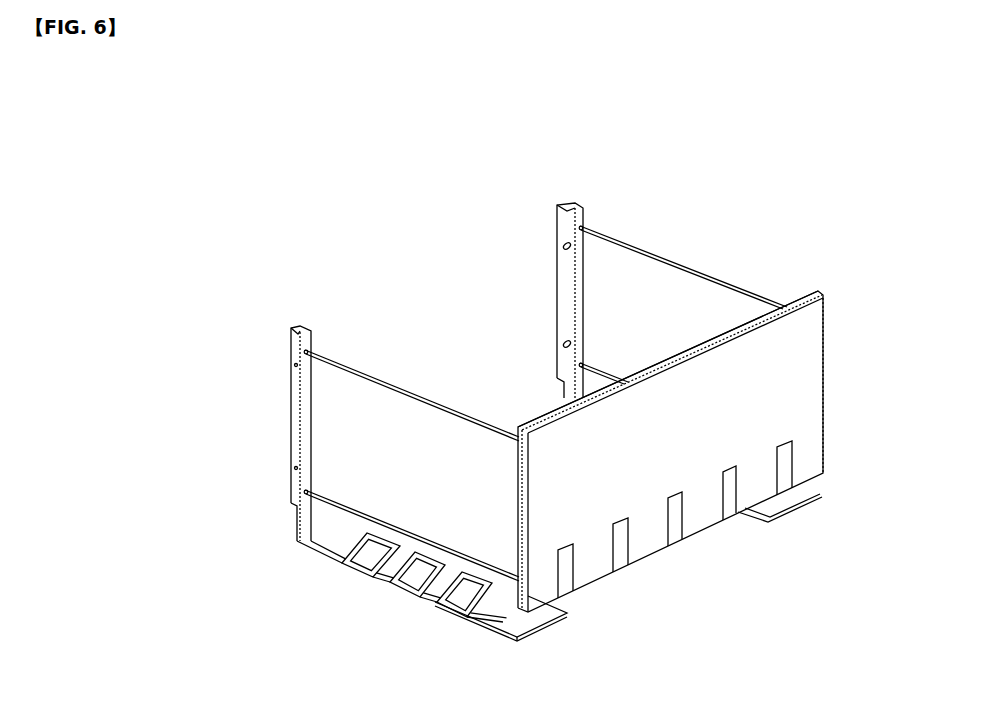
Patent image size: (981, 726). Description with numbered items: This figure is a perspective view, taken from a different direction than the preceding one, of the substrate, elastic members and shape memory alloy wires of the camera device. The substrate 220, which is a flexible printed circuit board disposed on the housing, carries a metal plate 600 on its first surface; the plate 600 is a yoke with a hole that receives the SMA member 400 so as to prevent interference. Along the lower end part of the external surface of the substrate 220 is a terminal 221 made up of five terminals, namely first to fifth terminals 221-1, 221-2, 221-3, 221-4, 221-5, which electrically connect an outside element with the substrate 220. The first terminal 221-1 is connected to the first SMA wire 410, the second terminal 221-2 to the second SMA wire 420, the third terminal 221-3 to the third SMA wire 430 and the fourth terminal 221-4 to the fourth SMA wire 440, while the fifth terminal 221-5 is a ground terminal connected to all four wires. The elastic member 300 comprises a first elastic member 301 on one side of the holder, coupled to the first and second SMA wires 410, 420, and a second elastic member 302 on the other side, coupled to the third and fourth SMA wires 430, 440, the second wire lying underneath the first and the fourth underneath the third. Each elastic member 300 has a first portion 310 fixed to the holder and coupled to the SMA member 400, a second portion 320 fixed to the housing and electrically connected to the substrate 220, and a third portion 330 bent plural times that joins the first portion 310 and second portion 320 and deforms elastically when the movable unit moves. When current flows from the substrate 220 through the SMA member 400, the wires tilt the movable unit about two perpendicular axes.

The substrate 220 is at (785, 382).
The terminal 221 is at (916, 552).
The first terminal 221-1 is at (566, 584).
The second terminal 221-2 is at (621, 558).
The third terminal 221-3 is at (676, 533).
The fourth terminal 221-4 is at (731, 508).
The fifth terminal 221-5 is at (786, 486).
The elastic member 300 is at (286, 401).
The first elastic member 301 is at (575, 205).
The second elastic member 302 is at (289, 334).
The first portion 310 is at (306, 438).
The second portion 320 is at (497, 624).
The third portion 330 is at (368, 574).
The SMA member 400 is at (730, 282).
The first SMA wire 410 is at (677, 262).
The second SMA wire 420 is at (604, 373).
The third SMA wire 430 is at (386, 384).
The fourth SMA wire 440 is at (400, 528).
The plate 600 is at (551, 412).